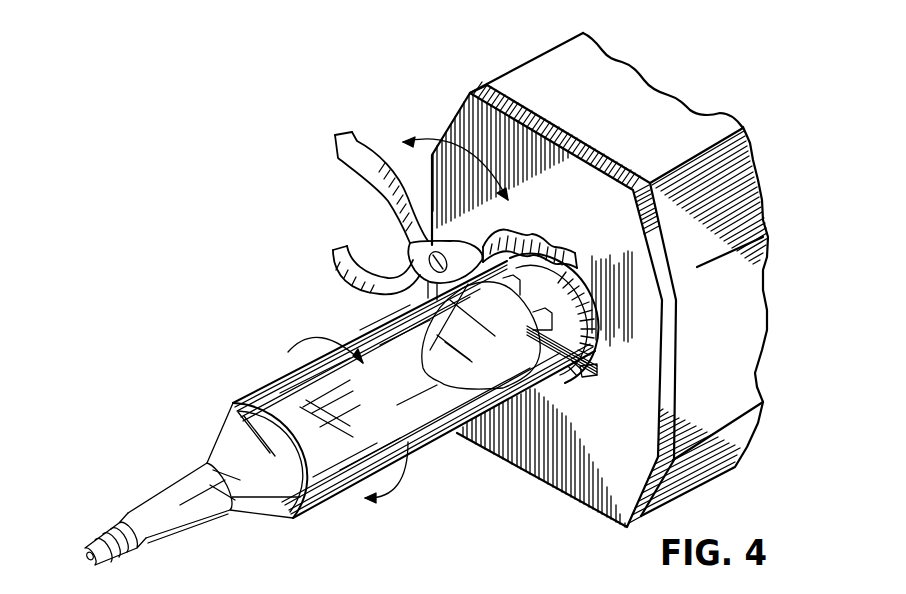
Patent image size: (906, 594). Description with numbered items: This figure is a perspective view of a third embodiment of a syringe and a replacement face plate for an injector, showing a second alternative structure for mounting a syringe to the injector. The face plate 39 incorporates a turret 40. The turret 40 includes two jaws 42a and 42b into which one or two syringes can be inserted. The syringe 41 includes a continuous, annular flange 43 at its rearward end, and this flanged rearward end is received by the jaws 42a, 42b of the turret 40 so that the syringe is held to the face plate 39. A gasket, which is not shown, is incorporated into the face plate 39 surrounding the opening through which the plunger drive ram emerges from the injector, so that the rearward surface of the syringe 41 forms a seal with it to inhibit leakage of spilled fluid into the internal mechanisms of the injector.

The face plate 39 is at (543, 486).
The turret 40 is at (387, 141).
The syringe 41 is at (280, 395).
The jaw 42a is at (366, 233).
The jaw 42b is at (572, 252).
The annular flange 43 is at (590, 305).